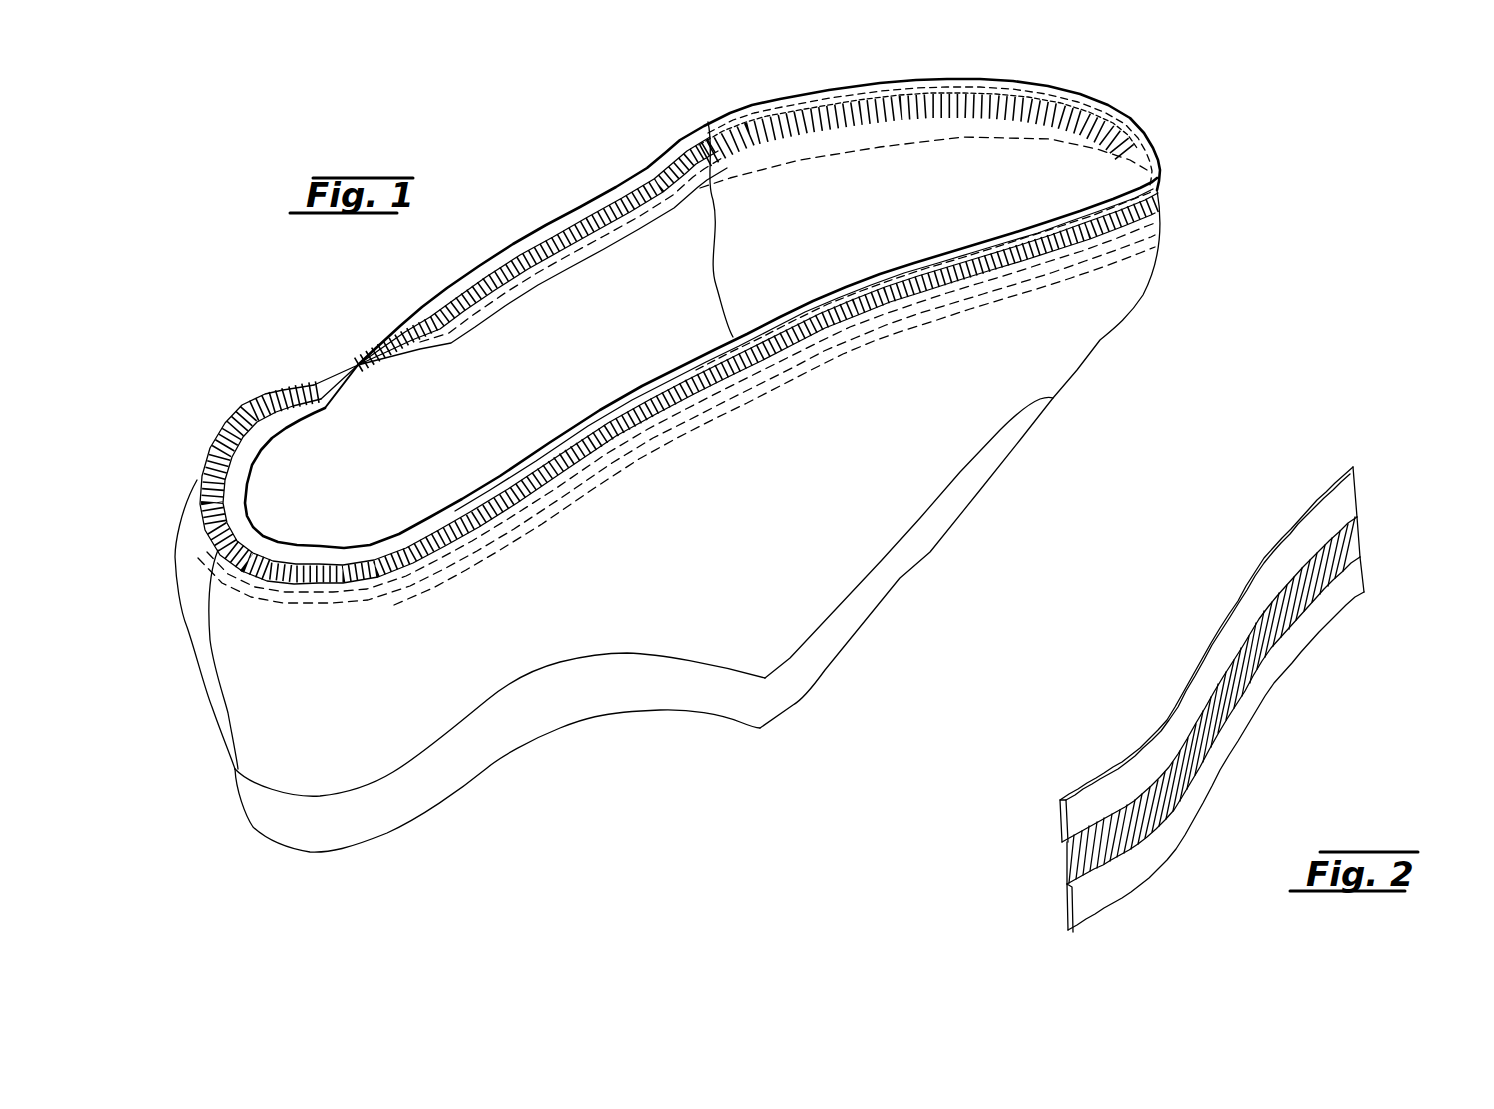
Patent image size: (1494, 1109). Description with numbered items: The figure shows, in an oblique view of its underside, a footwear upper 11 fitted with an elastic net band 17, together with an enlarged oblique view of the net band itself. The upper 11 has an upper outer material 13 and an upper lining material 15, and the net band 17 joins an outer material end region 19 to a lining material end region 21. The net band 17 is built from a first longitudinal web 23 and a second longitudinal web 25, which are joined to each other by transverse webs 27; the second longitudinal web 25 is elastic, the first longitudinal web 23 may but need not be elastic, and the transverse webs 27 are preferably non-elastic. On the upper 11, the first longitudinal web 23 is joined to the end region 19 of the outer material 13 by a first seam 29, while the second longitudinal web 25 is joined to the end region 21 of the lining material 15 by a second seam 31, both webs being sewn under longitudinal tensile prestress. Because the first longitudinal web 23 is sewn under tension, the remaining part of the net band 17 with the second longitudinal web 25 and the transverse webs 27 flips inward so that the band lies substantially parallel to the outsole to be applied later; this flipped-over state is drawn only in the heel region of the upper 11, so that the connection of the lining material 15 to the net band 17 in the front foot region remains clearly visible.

In FIG. 1, the upper 11 is at (194, 737).
In FIG. 1, the upper outer material 13 is at (1020, 373).
In FIG. 1, the upper lining material 15 is at (745, 233).
In FIG. 1, the elastic net band 17 is at (413, 312).
In FIG. 2, the elastic net band 17 is at (1134, 732).
In FIG. 1, the outer material end region 19 is at (185, 512).
In FIG. 1, the lining material end region 21 is at (1110, 103).
In FIG. 1, the first longitudinal web 23 is at (587, 250).
In FIG. 2, the first longitudinal web 23 is at (1228, 638).
In FIG. 1, the second longitudinal web 25 is at (595, 196).
In FIG. 2, the second longitudinal web 25 is at (1240, 720).
In FIG. 1, the transverse webs 27 is at (497, 292).
In FIG. 2, the transverse webs 27 is at (1064, 862).
In FIG. 1, the first seam 29 is at (450, 326).
In FIG. 1, the second seam 31 is at (603, 411).